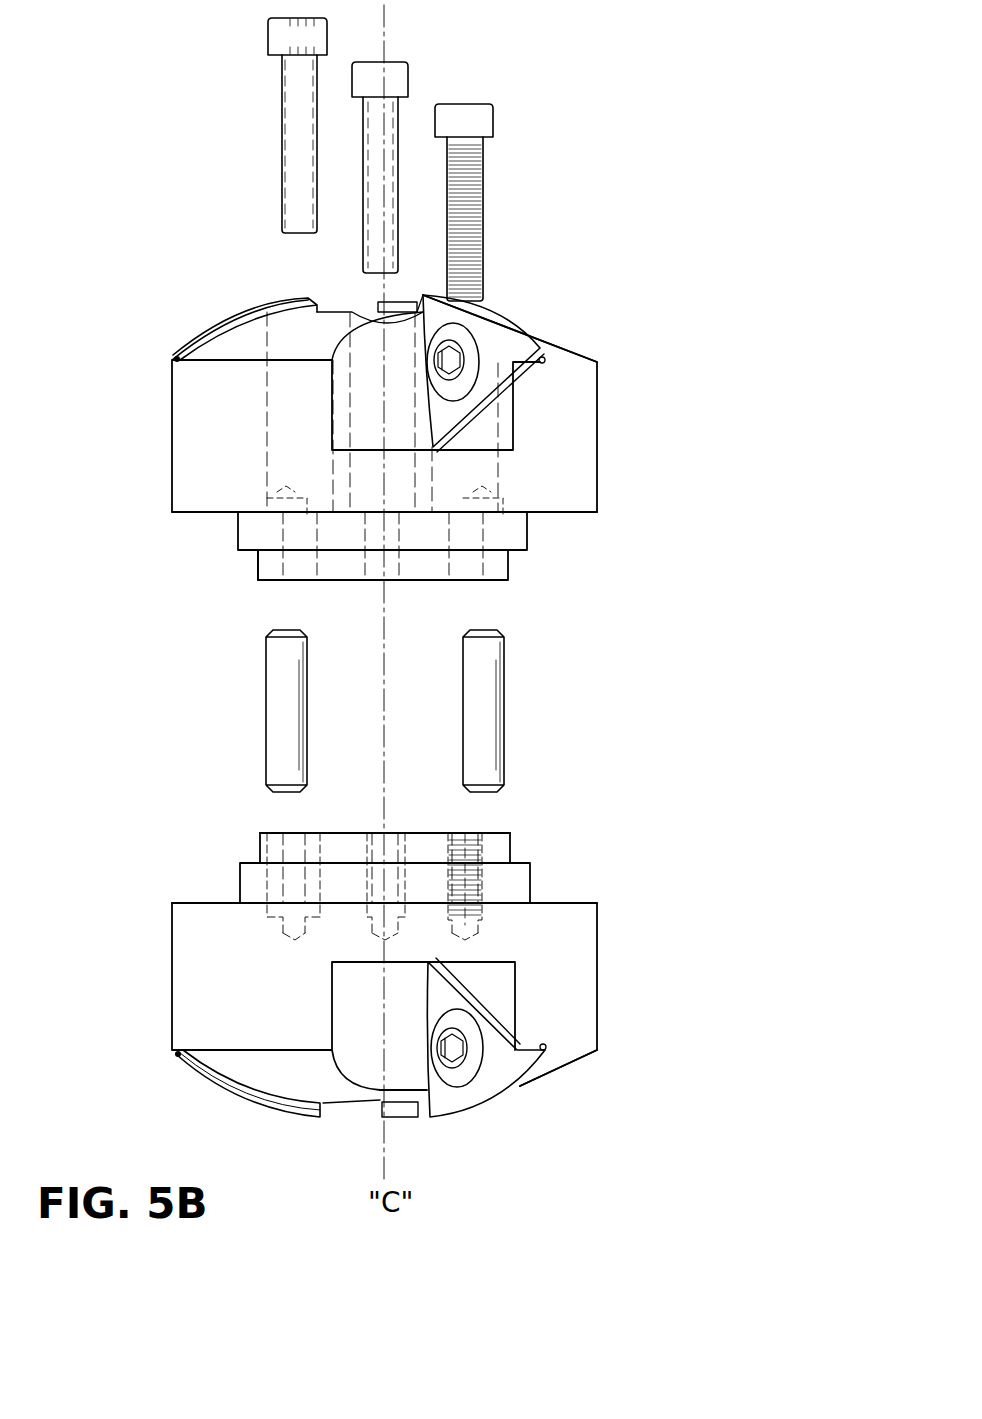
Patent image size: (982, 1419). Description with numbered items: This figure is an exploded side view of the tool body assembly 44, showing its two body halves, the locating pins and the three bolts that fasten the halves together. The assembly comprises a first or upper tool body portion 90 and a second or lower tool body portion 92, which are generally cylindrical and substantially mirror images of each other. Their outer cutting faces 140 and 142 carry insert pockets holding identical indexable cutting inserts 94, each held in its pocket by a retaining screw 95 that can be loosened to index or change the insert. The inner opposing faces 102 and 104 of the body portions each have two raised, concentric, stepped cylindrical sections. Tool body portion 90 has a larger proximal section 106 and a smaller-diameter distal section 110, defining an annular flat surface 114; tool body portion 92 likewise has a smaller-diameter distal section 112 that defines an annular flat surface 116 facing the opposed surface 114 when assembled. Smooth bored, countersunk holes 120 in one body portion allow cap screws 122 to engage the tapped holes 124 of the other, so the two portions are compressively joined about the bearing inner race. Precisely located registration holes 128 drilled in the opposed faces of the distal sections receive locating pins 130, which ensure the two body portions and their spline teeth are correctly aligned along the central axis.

The tool body assembly 44 is at (660, 1016).
The first or upper tool body portion 90 is at (173, 987).
The second or lower tool body portion 92 is at (172, 435).
The indexable cutting insert 94 is at (257, 317).
The retaining screw 95 is at (478, 370).
The inner opposing face 102 is at (579, 898).
The inner opposing face 104 is at (202, 513).
The proximal section 106 is at (530, 531).
The distal section 110 is at (260, 850).
The distal section 112 is at (510, 563).
The annular flat surface 114 is at (523, 858).
The annular flat surface 116 is at (247, 552).
The hole 120 is at (267, 420).
The cap screw 122 is at (485, 212).
The tapped hole 124 is at (483, 927).
The registration hole 128 is at (265, 503).
The locating pin 130 is at (505, 712).
The cutting face 140 is at (571, 1069).
The cutting face 142 is at (495, 313).